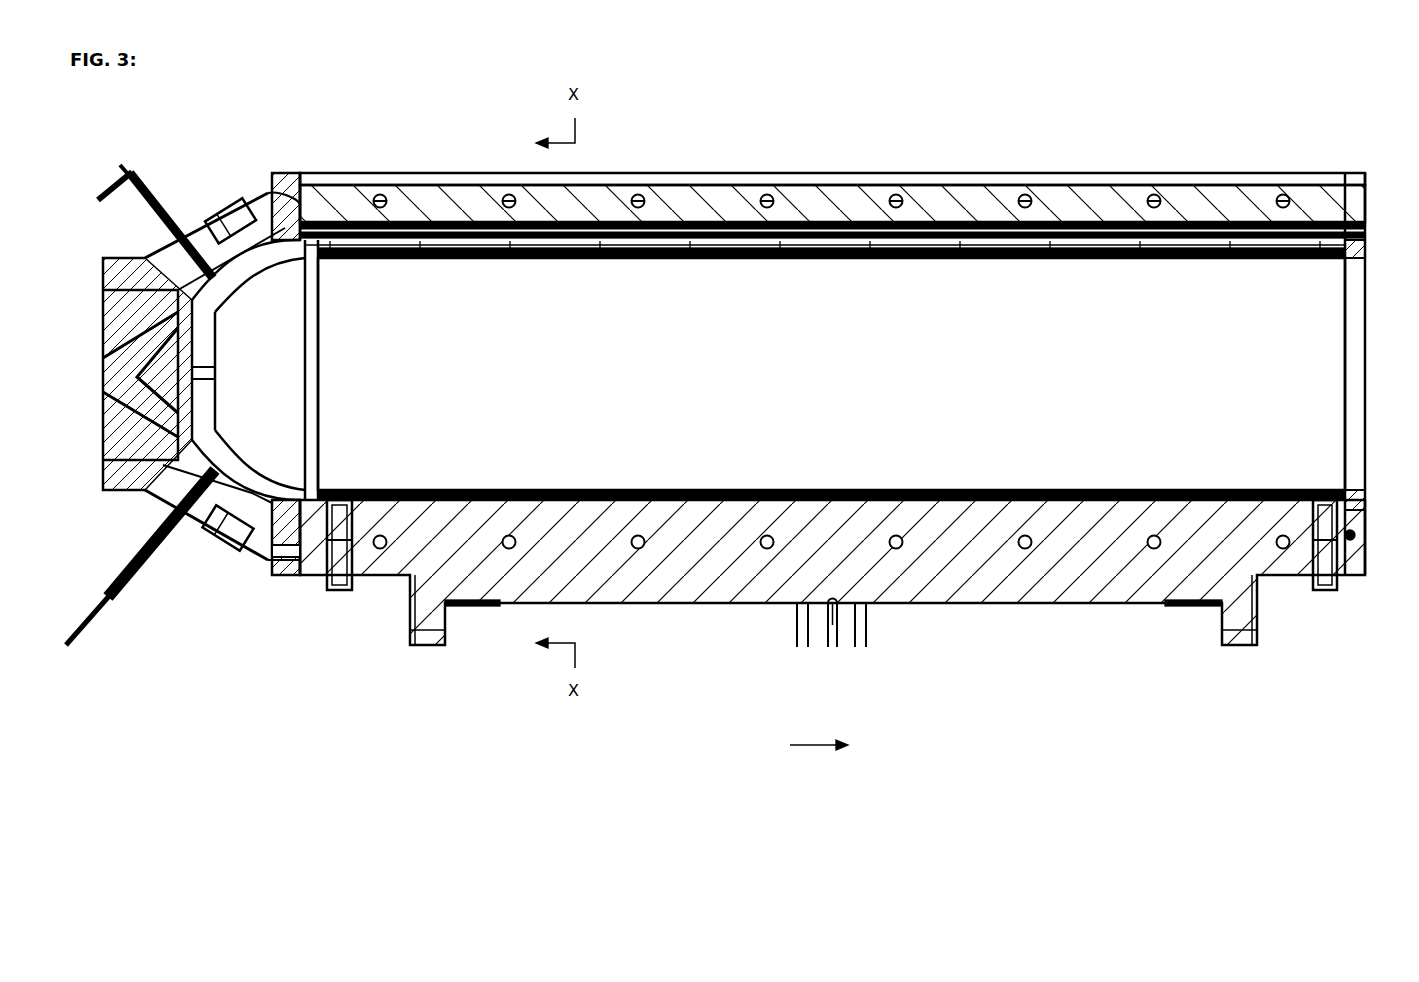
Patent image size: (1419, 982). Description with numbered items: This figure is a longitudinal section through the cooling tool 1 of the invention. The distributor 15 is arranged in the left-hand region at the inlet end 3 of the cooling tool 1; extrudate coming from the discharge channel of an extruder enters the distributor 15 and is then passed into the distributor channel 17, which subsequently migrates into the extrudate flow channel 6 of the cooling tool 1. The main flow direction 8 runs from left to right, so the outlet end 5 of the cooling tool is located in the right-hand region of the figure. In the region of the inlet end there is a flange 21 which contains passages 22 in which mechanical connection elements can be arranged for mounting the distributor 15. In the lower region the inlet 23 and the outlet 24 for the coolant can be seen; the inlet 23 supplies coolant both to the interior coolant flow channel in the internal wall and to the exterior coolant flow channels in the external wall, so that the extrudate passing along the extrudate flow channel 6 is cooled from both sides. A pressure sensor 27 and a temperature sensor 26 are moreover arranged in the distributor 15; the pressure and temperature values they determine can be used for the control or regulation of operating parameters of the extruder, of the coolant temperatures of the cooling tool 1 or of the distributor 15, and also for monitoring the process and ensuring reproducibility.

The cooling tool 1 is at (832, 417).
The inlet end 3 is at (82, 371).
The outlet end 5 is at (1387, 373).
The extrudate flow channel 6 is at (340, 226).
The main flow direction 8 is at (819, 733).
The distributor 15 is at (128, 348).
The distributor channel 17 is at (136, 262).
The flange 21 is at (838, 176).
The passages 22 is at (1033, 176).
The inlet 23 is at (1326, 592).
The outlet 24 is at (336, 592).
The temperature sensor 26 is at (138, 598).
The pressure sensor 27 is at (173, 195).